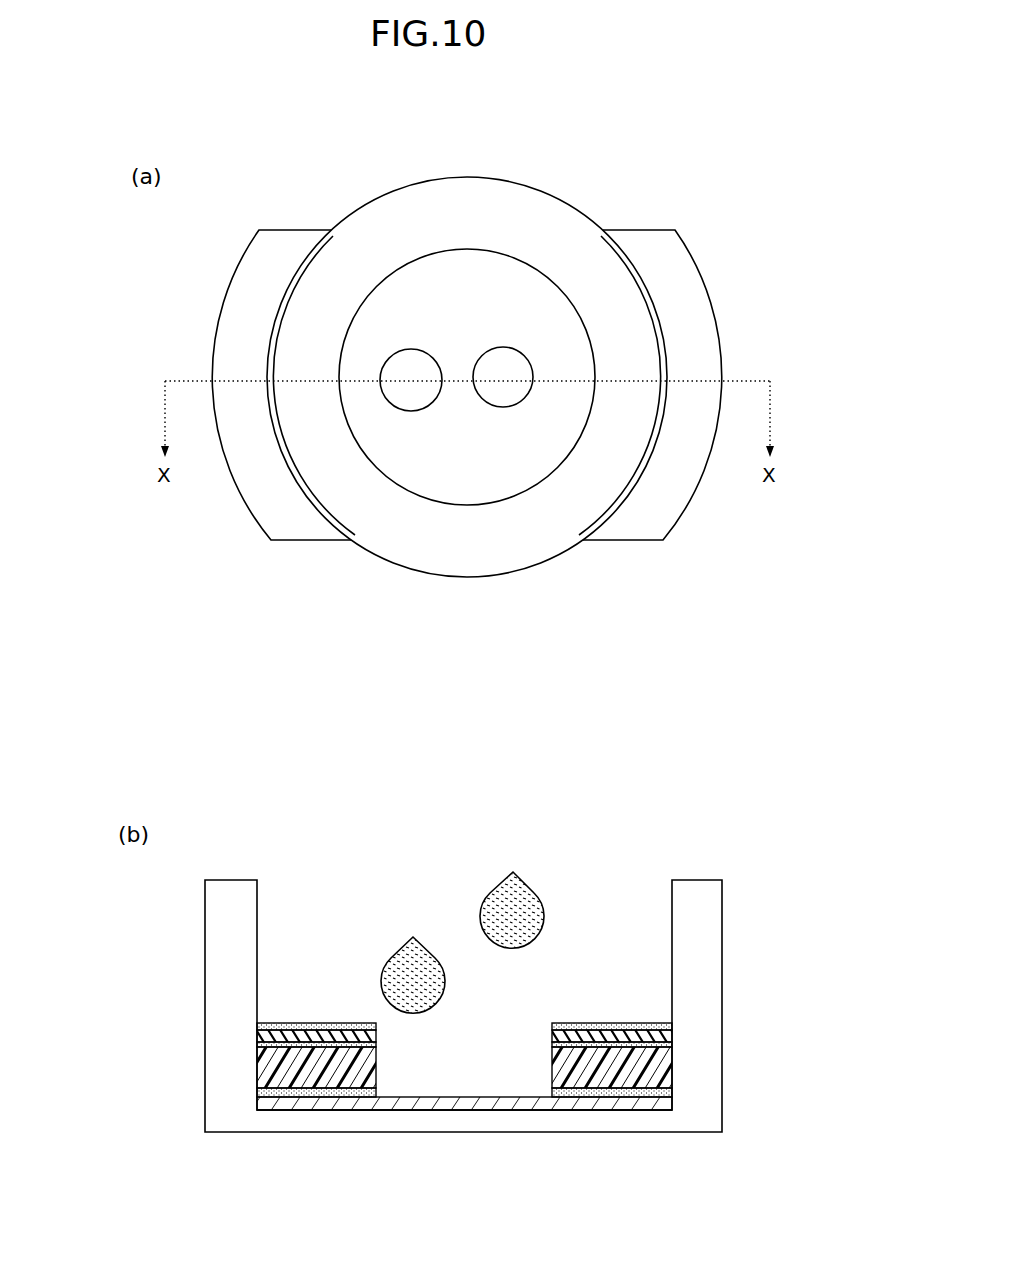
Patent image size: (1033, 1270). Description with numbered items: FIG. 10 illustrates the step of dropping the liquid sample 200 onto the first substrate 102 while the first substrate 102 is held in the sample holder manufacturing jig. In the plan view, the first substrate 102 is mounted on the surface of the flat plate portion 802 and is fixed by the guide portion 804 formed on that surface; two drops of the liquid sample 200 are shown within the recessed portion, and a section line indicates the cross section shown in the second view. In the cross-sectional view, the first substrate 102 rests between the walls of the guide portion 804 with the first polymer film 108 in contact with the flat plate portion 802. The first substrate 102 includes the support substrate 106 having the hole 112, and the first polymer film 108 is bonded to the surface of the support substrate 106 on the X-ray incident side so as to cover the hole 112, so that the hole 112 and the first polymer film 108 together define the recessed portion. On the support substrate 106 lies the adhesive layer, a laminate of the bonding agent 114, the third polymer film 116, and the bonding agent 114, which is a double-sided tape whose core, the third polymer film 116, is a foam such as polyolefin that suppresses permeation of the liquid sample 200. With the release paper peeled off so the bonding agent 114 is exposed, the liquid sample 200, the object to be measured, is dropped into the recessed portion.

The first substrate 102 is at (478, 177).
The liquid sample 200 is at (415, 350).
The guide portion 804 is at (236, 300).
The flat plate portion 802 is at (463, 1120).
The support substrate 106 is at (257, 1068).
The first polymer film 108 is at (257, 1104).
The hole 112 is at (485, 1033).
The bonding agent 114 is at (257, 1026).
The third polymer film 116 is at (257, 1036).